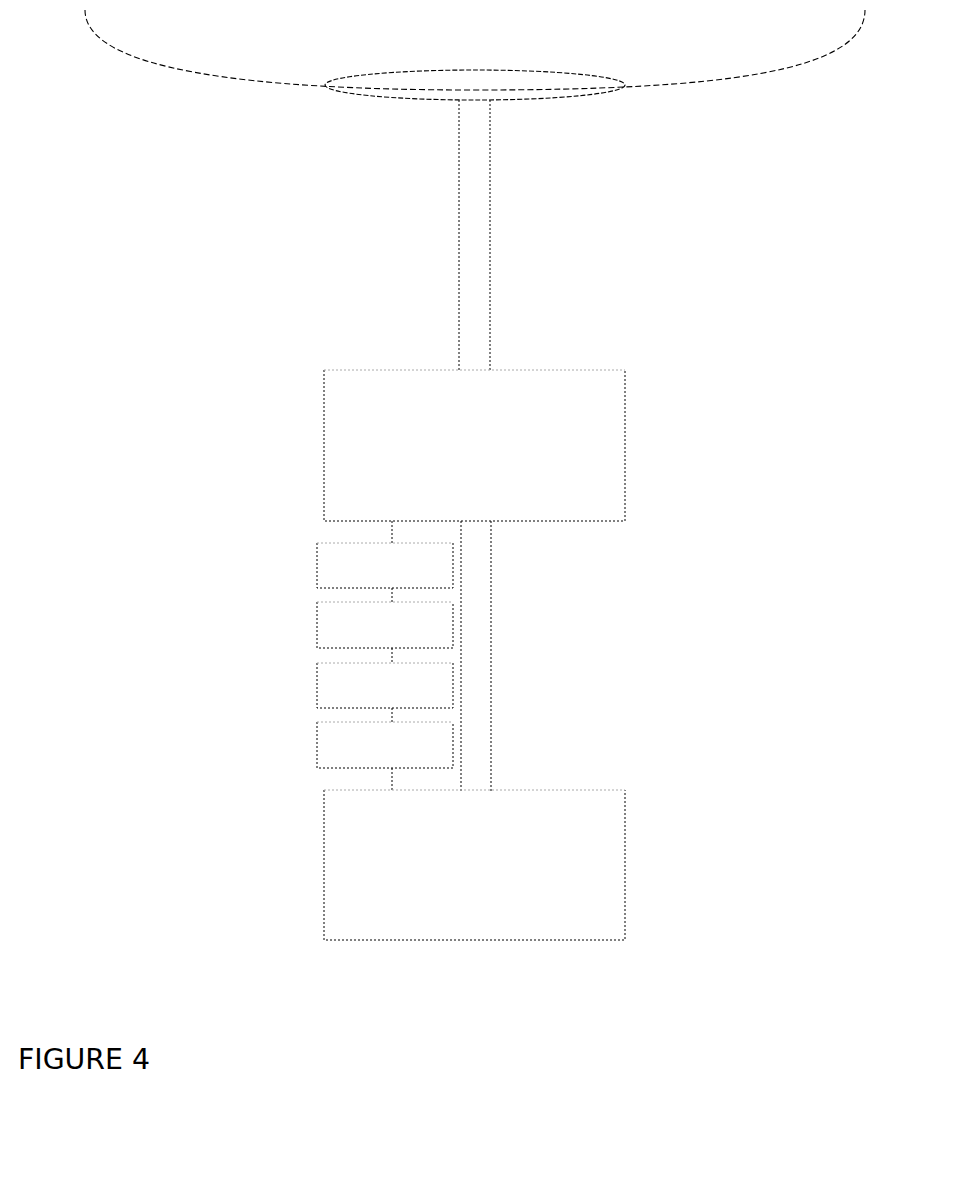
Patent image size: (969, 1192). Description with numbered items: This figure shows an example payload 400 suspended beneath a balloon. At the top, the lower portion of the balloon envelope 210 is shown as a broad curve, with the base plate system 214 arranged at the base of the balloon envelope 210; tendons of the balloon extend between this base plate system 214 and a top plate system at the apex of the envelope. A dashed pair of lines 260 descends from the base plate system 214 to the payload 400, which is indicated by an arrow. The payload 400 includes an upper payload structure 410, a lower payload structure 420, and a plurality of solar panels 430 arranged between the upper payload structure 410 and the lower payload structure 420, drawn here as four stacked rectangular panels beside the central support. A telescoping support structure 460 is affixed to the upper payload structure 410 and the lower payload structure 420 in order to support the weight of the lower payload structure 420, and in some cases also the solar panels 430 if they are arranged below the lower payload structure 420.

The balloon envelope 210 is at (690, 85).
The base plate system 214 is at (563, 98).
The upper support line 260 is at (490, 326).
The payload 400 is at (283, 305).
The upper payload structure 410 is at (625, 486).
The lower payload structure 420 is at (625, 878).
The solar panels 430 is at (317, 748).
The telescoping support structure 460 is at (492, 745).